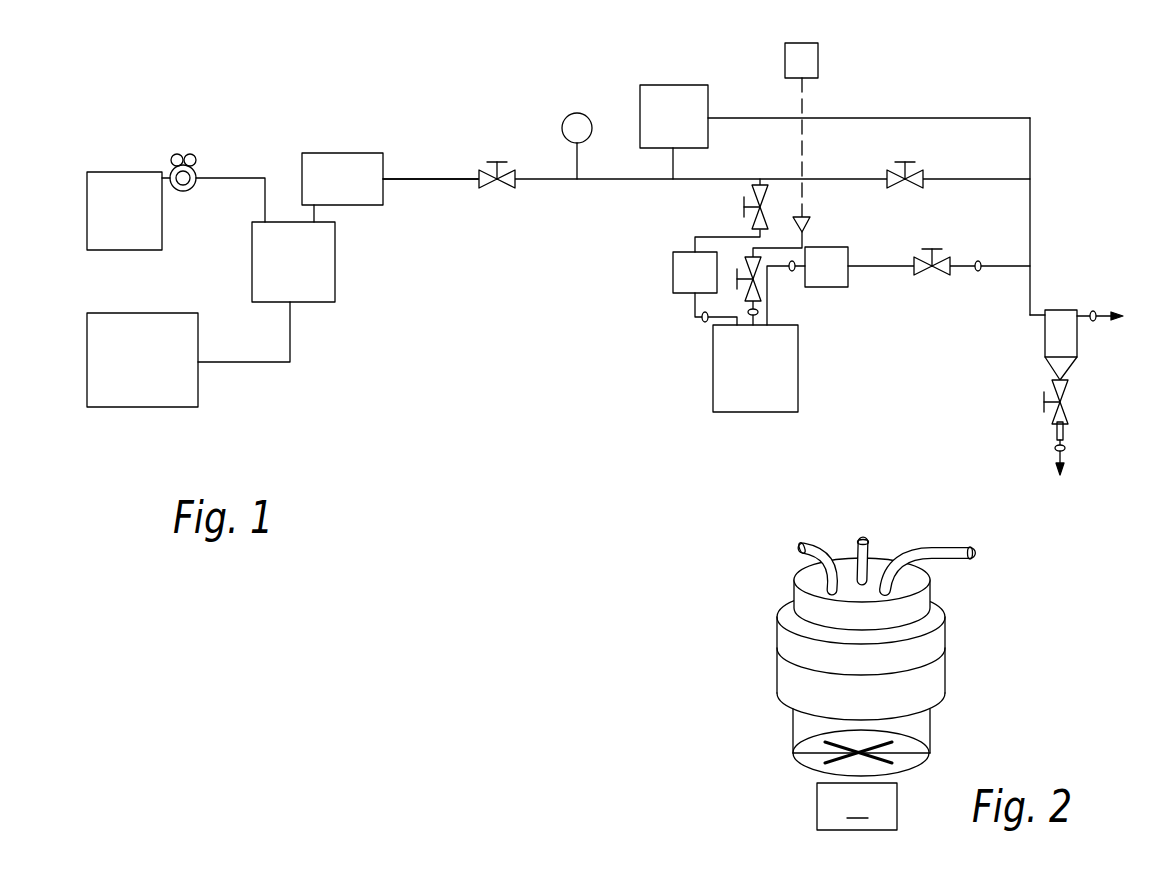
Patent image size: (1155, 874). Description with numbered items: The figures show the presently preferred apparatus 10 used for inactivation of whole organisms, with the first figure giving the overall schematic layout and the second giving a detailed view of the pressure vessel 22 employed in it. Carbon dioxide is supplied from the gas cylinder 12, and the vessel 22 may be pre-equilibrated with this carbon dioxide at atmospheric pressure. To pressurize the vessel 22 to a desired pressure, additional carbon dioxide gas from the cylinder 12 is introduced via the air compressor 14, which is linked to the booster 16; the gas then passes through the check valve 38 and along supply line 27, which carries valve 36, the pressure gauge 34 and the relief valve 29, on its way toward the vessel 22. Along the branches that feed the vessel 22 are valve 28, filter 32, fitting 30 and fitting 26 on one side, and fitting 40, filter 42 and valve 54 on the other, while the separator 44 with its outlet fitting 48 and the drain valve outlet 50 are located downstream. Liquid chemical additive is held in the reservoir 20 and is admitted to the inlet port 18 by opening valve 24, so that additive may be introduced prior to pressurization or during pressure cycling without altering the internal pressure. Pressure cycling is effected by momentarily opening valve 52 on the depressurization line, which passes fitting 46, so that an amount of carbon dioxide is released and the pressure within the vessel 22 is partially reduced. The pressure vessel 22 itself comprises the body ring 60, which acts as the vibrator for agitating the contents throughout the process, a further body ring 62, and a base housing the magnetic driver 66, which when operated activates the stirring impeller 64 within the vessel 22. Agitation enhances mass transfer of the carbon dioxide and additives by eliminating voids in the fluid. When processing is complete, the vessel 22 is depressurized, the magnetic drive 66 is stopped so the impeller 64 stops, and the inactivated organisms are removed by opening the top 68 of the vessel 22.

In FIG. 1, the cleaning system 10 is at (510, 412).
In FIG. 1, the gas cylinder 12 is at (112, 172).
In FIG. 1, the air compressor 14 is at (142, 313).
In FIG. 1, the booster 16 is at (252, 252).
In FIG. 1, the inlet port 18 is at (807, 223).
In FIG. 1, the reservoir 20 is at (818, 60).
In FIG. 1, the pressure vessel 22 is at (737, 412).
In FIG. 2, the pressure vessel 22 is at (693, 796).
In FIG. 1, the valve 24 is at (747, 270).
In FIG. 1, the inlet fitting 26 is at (760, 312).
In FIG. 2, the inlet fitting 26 is at (877, 550).
In FIG. 1, the supply line 27 is at (412, 179).
In FIG. 1, the valve 28 is at (745, 193).
In FIG. 1, the relief valve 29 is at (690, 85).
In FIG. 1, the fitting 30 is at (705, 322).
In FIG. 2, the fitting 30 is at (813, 547).
In FIG. 1, the filter 32 is at (672, 268).
In FIG. 1, the pressure gauge 34 is at (580, 118).
In FIG. 1, the valve 36 is at (505, 190).
In FIG. 1, the check valve 38 is at (340, 153).
In FIG. 1, the outlet fitting 40 is at (792, 272).
In FIG. 2, the outlet fitting 40 is at (957, 565).
In FIG. 1, the filter 42 is at (850, 252).
In FIG. 1, the separator 44 is at (1063, 310).
In FIG. 1, the fitting 46 is at (977, 273).
In FIG. 1, the outlet fitting 48 is at (1095, 323).
In FIG. 1, the drain valve outlet 50 is at (1053, 450).
In FIG. 1, the valve 52 is at (942, 257).
In FIG. 1, the valve 54 is at (917, 172).
In FIG. 2, the vibrator 60 is at (780, 632).
In FIG. 2, the vessel body ring 62 is at (780, 685).
In FIG. 2, the impeller 64 is at (877, 745).
In FIG. 2, the magnetic driver 66 is at (857, 806).
In FIG. 2, the top 68 is at (800, 573).